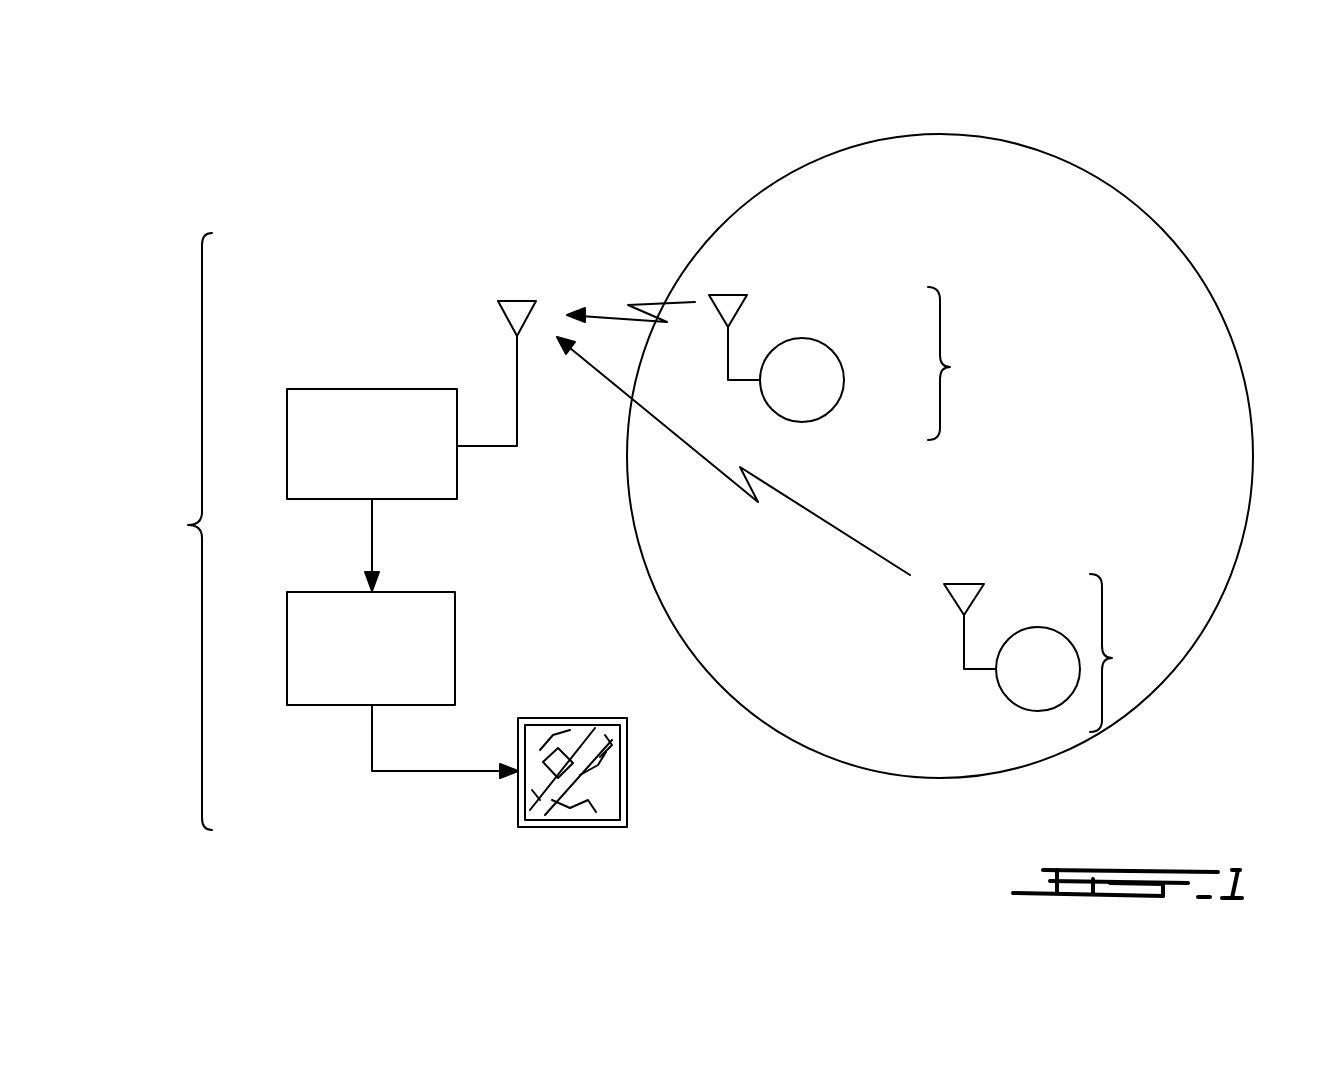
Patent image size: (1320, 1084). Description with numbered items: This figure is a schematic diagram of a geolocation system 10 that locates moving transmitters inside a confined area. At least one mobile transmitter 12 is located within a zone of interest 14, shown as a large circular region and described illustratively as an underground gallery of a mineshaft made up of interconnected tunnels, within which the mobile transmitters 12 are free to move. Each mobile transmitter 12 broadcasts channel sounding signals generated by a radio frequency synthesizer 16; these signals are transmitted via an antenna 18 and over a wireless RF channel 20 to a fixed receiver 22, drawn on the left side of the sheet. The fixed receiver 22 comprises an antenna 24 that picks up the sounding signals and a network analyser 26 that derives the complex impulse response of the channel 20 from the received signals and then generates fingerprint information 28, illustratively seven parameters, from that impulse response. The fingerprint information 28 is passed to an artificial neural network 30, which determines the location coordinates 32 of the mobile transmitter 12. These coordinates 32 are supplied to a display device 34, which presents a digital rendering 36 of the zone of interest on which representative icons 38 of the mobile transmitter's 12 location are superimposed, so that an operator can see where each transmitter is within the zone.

The geolocation system 10 is at (592, 198).
The mobile transmitter 12 is at (1038, 509).
The zone of interest 14 is at (708, 240).
The radio frequency synthesizer 16 is at (808, 340).
The antenna 18 is at (729, 295).
The wireless RF channel 20 is at (797, 508).
The fixed receiver 22 is at (181, 531).
The antenna 24 is at (515, 300).
The network analyser 26 is at (372, 389).
The fingerprint information 28 is at (372, 526).
The artificial neural network 30 is at (287, 640).
The location coordinates 32 is at (388, 771).
The display device 34 is at (571, 718).
The digital rendering 36 is at (530, 798).
The representative icons 38 is at (578, 762).